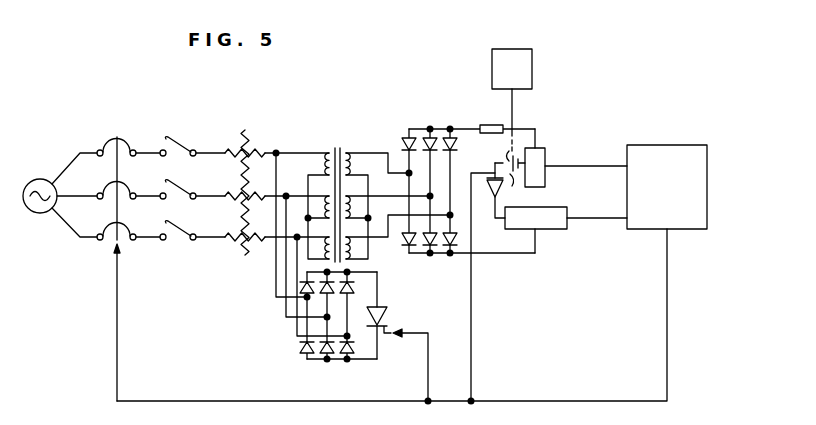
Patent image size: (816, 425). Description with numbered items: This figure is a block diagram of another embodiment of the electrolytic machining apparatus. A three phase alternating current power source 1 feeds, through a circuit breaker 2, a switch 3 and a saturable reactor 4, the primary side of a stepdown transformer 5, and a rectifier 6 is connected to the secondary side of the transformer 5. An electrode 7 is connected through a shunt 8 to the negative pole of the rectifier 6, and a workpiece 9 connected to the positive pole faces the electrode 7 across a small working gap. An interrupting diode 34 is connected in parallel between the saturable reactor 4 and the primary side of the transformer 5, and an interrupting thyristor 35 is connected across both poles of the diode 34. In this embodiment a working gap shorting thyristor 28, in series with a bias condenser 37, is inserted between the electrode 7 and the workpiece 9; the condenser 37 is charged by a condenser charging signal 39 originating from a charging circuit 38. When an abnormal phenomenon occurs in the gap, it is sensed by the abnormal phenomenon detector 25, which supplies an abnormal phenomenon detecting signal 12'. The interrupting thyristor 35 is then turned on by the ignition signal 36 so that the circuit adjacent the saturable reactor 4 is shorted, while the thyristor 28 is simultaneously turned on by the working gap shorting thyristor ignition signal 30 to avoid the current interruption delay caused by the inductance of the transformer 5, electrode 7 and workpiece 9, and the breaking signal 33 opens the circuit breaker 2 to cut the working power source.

The three phase alternating current power source 1 is at (47, 179).
The circuit breaker 2 is at (117, 137).
The switch 3 is at (178, 138).
The saturable reactor 4 is at (251, 140).
The stepdown transformer 5 is at (337, 147).
The rectifier 6 is at (433, 128).
The electrode 7 is at (546, 158).
The shunt 8 is at (490, 125).
The workpiece 9 is at (552, 229).
The abnormal phenomenon detecting signal 12' is at (413, 315).
The abnormal phenomenon detector 25 is at (660, 145).
The working gap shorting thyristor 28 is at (492, 170).
The working gap shorting thyristor ignition signal 30 is at (477, 270).
The breaking signal 33 is at (117, 317).
The interrupting diode 34 is at (304, 348).
The interrupting thyristor 35 is at (390, 308).
The ignition signal of the interrupting thyristor 36 is at (429, 374).
The bias condenser 37 is at (512, 183).
The charging circuit 38 is at (510, 48).
The condenser charging signal 39 is at (512, 118).